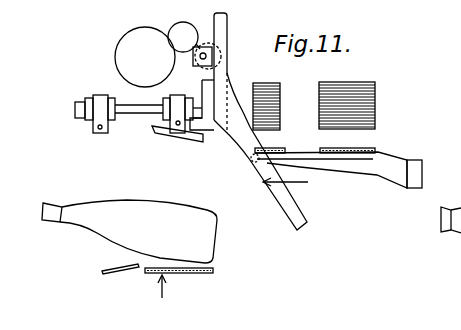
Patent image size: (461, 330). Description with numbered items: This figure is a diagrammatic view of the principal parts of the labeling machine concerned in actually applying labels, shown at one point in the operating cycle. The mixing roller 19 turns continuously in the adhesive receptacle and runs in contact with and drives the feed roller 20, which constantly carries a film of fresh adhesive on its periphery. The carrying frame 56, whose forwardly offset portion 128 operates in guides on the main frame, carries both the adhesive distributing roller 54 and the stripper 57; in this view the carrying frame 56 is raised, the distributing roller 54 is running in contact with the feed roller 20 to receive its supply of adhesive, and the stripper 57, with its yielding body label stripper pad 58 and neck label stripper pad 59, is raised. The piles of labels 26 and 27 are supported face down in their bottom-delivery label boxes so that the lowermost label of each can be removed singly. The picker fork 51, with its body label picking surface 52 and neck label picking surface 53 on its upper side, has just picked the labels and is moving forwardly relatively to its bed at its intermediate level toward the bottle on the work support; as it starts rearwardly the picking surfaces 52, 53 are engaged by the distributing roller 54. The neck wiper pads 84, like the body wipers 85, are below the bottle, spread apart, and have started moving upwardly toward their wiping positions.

The mixing roller 19 is at (145, 57).
The feed roller 20 is at (184, 37).
The forwardly offset portion 128 is at (229, 33).
The adhesive distributing roller 54 is at (194, 59).
The stripper 57 is at (135, 113).
The neck label stripper pad 59 is at (93, 128).
The body label stripper pad 58 is at (182, 140).
The pile of labels 26 is at (266, 97).
The pile of labels 27 is at (347, 96).
The neck label picking surface 53 is at (288, 152).
The body label picking surface 52 is at (366, 152).
The picker fork 51 is at (336, 162).
The carrying frame 56 is at (258, 166).
The neck wiper pad 84 is at (115, 273).
The guide strip 85 is at (188, 274).